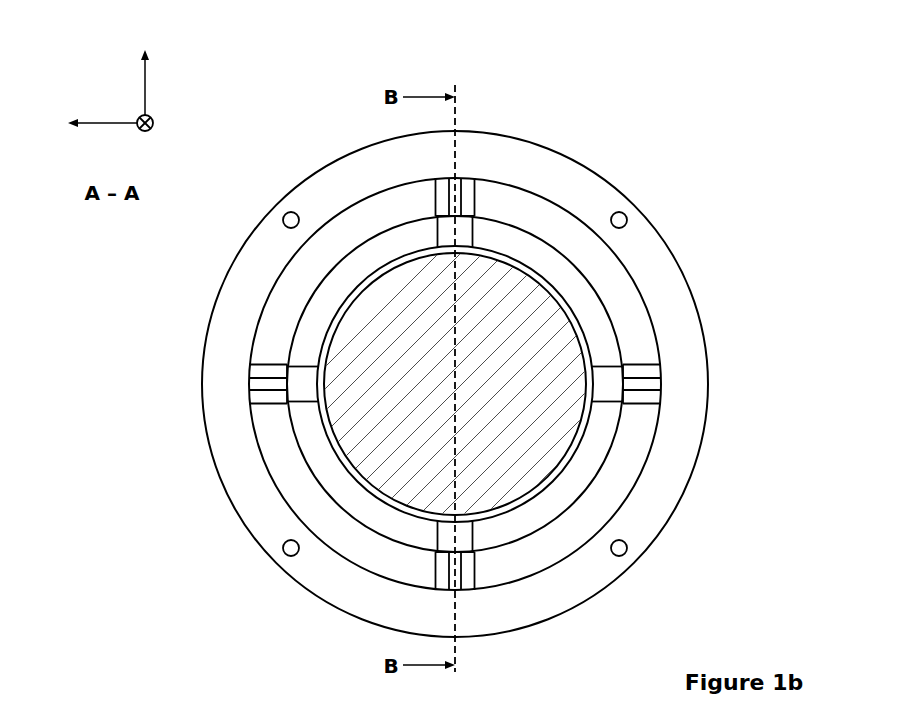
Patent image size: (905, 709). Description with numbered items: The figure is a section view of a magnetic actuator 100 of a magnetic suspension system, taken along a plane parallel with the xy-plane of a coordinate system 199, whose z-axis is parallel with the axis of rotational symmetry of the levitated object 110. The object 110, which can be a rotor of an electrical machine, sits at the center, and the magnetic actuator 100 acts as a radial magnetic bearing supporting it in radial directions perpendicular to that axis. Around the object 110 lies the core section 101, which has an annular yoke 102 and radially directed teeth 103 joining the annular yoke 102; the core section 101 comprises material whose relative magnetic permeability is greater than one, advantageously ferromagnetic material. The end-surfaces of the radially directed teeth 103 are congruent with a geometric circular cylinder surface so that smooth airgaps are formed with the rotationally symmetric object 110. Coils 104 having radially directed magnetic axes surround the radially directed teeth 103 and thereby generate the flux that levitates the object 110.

The magnetic actuator 100 is at (168, 293).
The core section 101 is at (201, 403).
The annular yoke 102 is at (500, 149).
The radially directed teeth 103 is at (382, 253).
The coils 104 is at (297, 265).
The object 110 is at (392, 391).
The coordinate system 199 is at (86, 97).